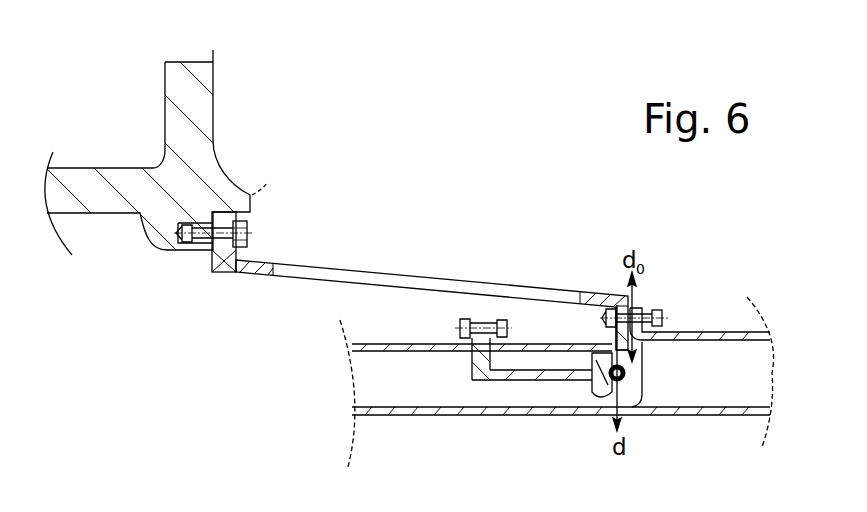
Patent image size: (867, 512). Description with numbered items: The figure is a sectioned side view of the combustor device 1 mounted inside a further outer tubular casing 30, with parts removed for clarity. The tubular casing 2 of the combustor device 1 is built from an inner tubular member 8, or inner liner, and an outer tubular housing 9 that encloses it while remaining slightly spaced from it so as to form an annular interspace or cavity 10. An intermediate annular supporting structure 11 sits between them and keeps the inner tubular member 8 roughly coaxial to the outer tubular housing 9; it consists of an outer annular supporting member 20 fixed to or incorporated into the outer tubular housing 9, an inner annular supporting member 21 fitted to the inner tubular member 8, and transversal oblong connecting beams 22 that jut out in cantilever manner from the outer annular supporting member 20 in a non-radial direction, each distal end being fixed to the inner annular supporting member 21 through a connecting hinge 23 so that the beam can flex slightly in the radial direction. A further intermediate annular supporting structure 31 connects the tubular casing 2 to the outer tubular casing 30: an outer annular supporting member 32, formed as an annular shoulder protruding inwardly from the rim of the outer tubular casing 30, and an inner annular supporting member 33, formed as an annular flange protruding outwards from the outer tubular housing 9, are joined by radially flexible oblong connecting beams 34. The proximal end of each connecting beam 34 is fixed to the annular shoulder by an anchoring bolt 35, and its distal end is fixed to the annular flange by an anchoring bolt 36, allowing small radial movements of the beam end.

The combustor device 1 is at (554, 340).
The tubular casing 2 is at (531, 373).
The inner tubular member 8 is at (542, 432).
The outer tubular housing 9 is at (353, 347).
The annular interspace or cavity 10 is at (439, 403).
The intermediate annular supporting structure 11 is at (489, 387).
The outer annular supporting member 20 is at (478, 322).
The inner annular supporting member 21 is at (628, 412).
The oblong connecting beam 22 is at (538, 378).
The connecting hinge 23 is at (642, 373).
The outer tubular casing 30 is at (178, 135).
The further intermediate annular supporting structure 31 is at (518, 270).
The outer annular supporting member 32 is at (222, 255).
The inner annular supporting member 33 is at (633, 307).
The oblong connecting beam 34 is at (347, 274).
The anchoring bolt 35 is at (250, 231).
The anchoring bolt 36 is at (660, 312).